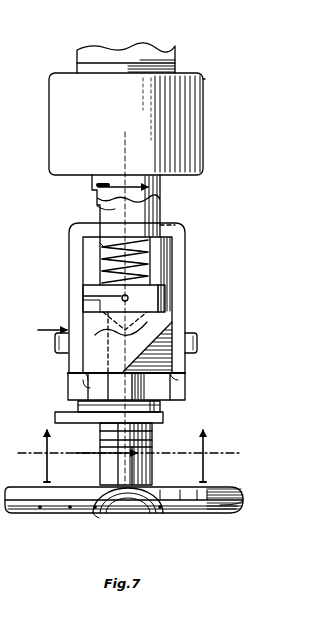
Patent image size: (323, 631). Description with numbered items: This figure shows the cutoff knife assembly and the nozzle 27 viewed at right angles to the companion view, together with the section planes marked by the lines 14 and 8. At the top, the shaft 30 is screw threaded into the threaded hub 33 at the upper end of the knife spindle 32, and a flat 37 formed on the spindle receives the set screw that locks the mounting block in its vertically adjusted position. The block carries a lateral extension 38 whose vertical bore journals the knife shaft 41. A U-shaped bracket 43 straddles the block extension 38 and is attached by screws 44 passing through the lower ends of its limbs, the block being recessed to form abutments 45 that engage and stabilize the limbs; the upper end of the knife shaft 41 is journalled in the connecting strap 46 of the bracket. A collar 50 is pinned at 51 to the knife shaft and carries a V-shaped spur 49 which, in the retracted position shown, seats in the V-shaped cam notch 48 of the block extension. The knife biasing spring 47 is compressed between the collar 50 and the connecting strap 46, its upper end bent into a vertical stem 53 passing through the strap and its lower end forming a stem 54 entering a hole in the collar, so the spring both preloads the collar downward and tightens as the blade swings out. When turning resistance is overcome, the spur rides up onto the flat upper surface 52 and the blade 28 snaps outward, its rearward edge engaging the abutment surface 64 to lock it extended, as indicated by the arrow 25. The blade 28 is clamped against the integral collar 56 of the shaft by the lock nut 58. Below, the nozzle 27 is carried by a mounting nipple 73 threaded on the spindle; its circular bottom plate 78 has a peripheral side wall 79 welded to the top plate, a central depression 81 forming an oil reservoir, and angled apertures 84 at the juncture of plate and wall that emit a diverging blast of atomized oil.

The shaft 30 is at (165, 57).
The knife spindle 32 is at (207, 82).
The threaded hub 33 is at (203, 121).
The section line 14 is at (129, 322).
The connecting strap 46 is at (163, 212).
The flat 37 is at (96, 217).
The vertical stem 53 is at (180, 228).
The knife biasing spring 47 is at (100, 250).
The knife shaft 41 is at (150, 262).
The U-shaped bracket 43 is at (186, 270).
The stem 54 is at (84, 286).
The pin 51 is at (120, 297).
The collar 50 is at (172, 300).
The flat upper surface 52 is at (82, 305).
The direction arrow 25 is at (36, 326).
The V-shaped cam notch 48 is at (180, 323).
The V-shaped spur 49 is at (115, 335).
The screws 44 is at (55, 345).
The lateral extension 38 is at (90, 365).
The abutments 45 is at (84, 380).
The abutment surface 64 is at (85, 392).
The integral collar 56 is at (160, 408).
The blade 28 is at (70, 424).
The lock nut 58 is at (152, 436).
The mounting nipple 73 is at (150, 470).
The section line 8 is at (123, 456).
The nozzle 27 is at (44, 512).
The peripheral side wall 79 is at (80, 518).
The spaced apertures 84 is at (97, 518).
The depression 81 is at (152, 522).
The circular bottom plate 78 is at (208, 513).